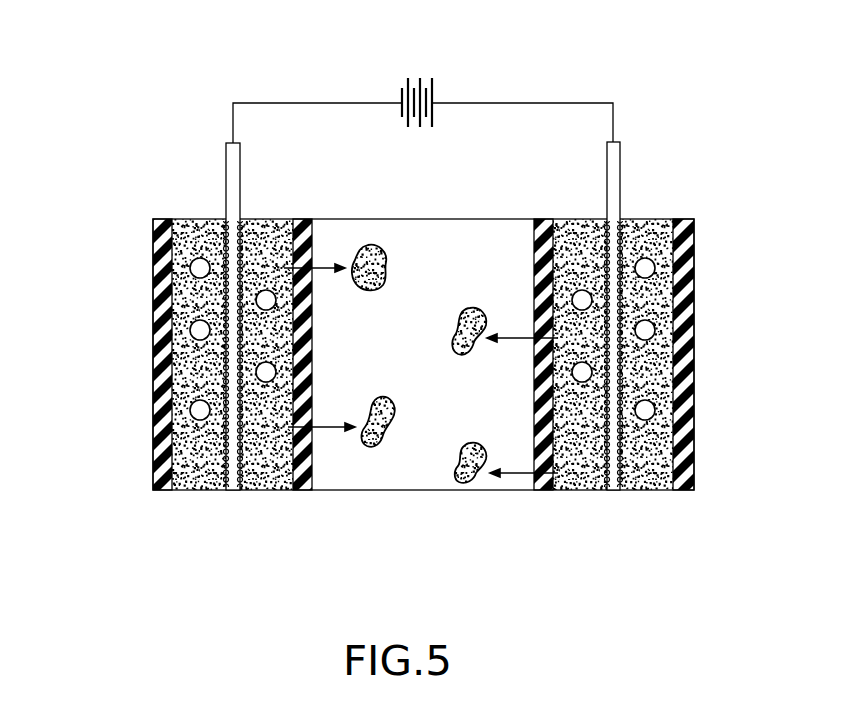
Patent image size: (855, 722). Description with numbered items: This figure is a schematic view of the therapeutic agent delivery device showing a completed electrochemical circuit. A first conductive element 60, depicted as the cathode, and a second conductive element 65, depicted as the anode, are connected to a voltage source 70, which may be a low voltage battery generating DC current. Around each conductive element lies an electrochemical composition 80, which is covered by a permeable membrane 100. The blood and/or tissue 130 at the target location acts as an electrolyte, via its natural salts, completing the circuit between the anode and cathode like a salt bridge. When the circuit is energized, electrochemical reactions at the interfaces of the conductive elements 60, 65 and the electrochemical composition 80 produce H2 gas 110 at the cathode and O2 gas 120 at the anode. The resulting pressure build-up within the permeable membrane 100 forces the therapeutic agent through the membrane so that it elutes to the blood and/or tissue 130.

The first conductive element 60 is at (232, 180).
The second conductive element 65 is at (613, 167).
The voltage source 70 is at (420, 70).
The electrochemical composition 80 is at (263, 492).
The permeable membrane 100 is at (168, 490).
The H2 gas 110 is at (198, 265).
The O2 gas 120 is at (645, 264).
The blood and/or tissue 130 is at (422, 492).